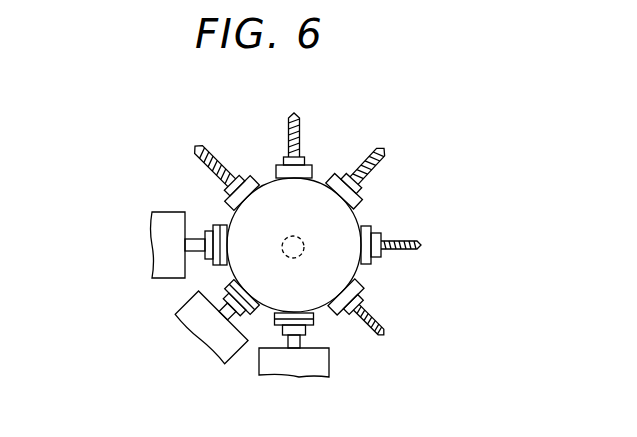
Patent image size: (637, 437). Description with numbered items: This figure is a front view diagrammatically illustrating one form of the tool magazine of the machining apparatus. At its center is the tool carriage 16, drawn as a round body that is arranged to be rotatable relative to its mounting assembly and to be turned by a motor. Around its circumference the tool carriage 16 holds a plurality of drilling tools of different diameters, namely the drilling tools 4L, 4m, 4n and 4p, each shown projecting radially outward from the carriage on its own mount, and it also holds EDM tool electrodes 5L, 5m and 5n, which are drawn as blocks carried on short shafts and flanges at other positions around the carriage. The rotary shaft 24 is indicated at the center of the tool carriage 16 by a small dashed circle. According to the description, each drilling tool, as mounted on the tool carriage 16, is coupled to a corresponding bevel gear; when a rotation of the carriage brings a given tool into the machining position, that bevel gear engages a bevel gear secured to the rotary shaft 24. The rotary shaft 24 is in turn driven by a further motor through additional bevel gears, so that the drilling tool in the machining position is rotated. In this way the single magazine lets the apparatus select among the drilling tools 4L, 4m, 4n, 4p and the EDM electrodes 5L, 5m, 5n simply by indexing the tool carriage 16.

The tool carriage 16 is at (316, 190).
The rotary shaft 24 is at (300, 243).
The drilling tool 4L is at (206, 148).
The drilling tool 4m is at (298, 124).
The drilling tool 4n is at (383, 157).
The drilling tool 4p is at (378, 331).
The EDM tool electrode 5L is at (333, 377).
The EDM tool electrode 5m is at (186, 333).
The EDM tool electrode 5n is at (152, 230).